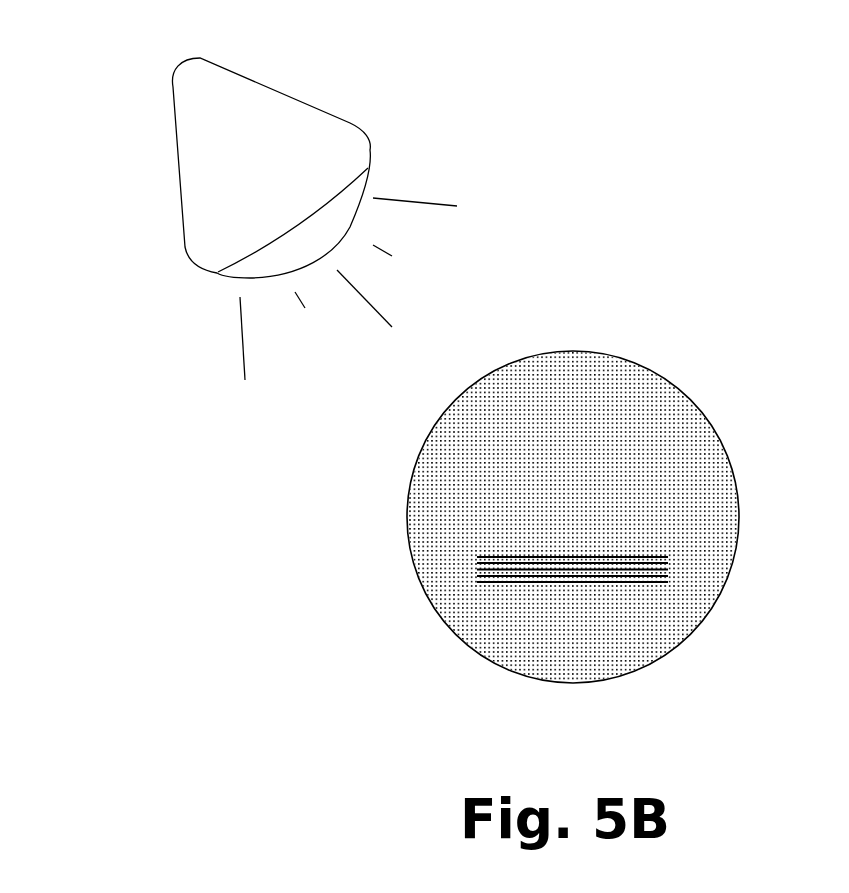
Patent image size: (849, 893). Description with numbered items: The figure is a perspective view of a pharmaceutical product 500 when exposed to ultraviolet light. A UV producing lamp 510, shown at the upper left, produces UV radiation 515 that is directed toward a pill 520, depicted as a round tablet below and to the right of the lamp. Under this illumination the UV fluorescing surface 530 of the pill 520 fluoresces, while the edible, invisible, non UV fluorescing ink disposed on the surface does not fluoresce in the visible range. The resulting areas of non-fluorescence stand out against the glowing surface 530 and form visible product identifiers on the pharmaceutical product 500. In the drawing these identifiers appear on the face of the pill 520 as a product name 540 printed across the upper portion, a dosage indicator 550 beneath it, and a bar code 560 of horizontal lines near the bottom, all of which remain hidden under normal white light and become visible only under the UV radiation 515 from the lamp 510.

The pharmaceutical product 500 is at (562, 426).
The UV producing lamp 510 is at (423, 148).
The UV radiation 515 is at (462, 213).
The pill 520 is at (733, 477).
The UV fluorescing surface 530 is at (698, 532).
The product name 540 is at (502, 447).
The dosage indicator 550 is at (497, 493).
The bar code 560 is at (485, 557).